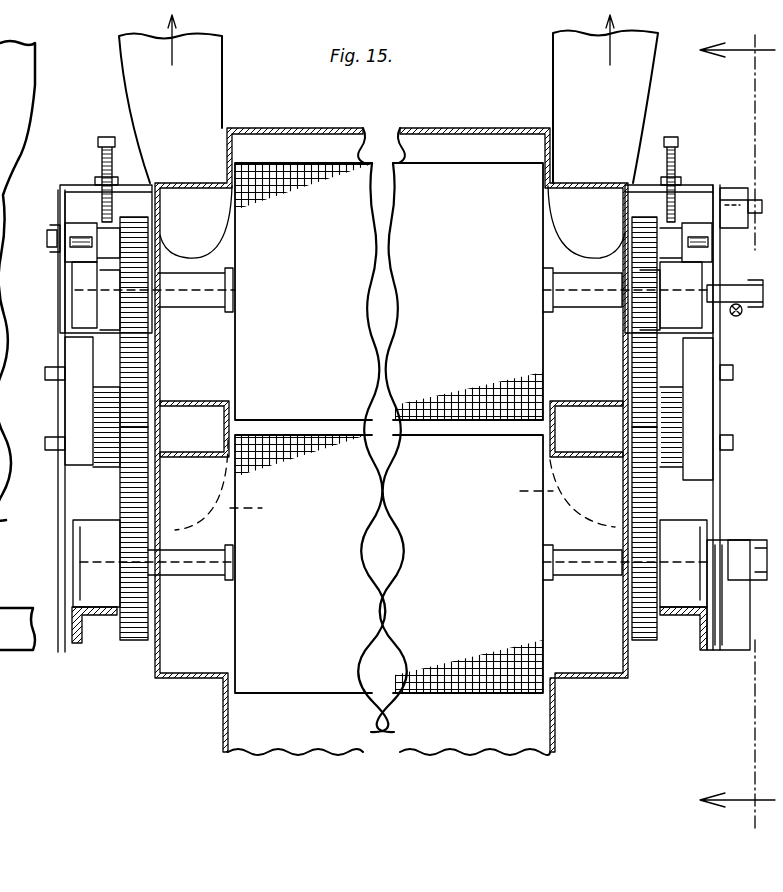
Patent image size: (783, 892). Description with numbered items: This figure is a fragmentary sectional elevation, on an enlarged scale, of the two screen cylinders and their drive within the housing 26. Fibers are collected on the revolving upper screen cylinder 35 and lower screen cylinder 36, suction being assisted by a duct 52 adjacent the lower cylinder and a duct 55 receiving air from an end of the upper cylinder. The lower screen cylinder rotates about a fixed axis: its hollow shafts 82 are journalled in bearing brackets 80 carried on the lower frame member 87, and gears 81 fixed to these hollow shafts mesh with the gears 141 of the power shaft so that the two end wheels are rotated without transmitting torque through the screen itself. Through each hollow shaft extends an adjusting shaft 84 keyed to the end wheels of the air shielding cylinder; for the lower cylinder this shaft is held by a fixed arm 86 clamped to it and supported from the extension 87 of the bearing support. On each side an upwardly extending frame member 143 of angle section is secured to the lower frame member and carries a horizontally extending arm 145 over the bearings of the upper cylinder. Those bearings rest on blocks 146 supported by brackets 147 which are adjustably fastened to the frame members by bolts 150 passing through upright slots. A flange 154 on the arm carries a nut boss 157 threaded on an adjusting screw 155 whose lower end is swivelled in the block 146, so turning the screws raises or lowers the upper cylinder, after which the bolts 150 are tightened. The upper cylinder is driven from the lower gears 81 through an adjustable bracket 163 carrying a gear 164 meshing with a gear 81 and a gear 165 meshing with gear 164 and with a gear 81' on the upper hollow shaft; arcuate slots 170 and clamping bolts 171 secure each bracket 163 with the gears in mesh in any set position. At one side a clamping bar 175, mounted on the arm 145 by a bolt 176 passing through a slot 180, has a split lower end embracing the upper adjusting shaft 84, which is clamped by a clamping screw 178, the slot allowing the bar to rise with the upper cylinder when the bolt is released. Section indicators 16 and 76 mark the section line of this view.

The section line 16 is at (723, 822).
The housing 26 is at (358, 130).
The upper screen cylinder 35 is at (457, 163).
The lower screen cylinder 36 is at (410, 700).
The duct 52 is at (395, 485).
The duct 55 is at (222, 40).
The section line 76 is at (737, 425).
The bearing bracket 80 is at (105, 525).
The gear 81 is at (388, 576).
The gear 81' is at (388, 305).
The hollow shaft 82 is at (200, 275).
The adjusting shaft 84 is at (760, 305).
The fixed arm 86 is at (740, 652).
The frame member 87 is at (82, 645).
The gear 141 is at (0, 743).
The frame member 143 is at (57, 490).
The horizontally extending arm 145 is at (75, 175).
The block 146 is at (115, 315).
The bracket 147 is at (72, 225).
The bolt 150 is at (32, 247).
The flange 154 is at (123, 180).
The adjusting screw 155 is at (110, 135).
The nut boss 157 is at (116, 160).
The adjustable bracket 163 is at (90, 345).
The gear 164 is at (140, 432).
The gear 165 is at (135, 372).
The arcuate slot 170 is at (60, 360).
The clamping bolt 171 is at (0, 348).
The clamping bar 175 is at (730, 185).
The bolt 176 is at (755, 198).
The clamping screw 178 is at (740, 318).
The slot 180 is at (728, 195).